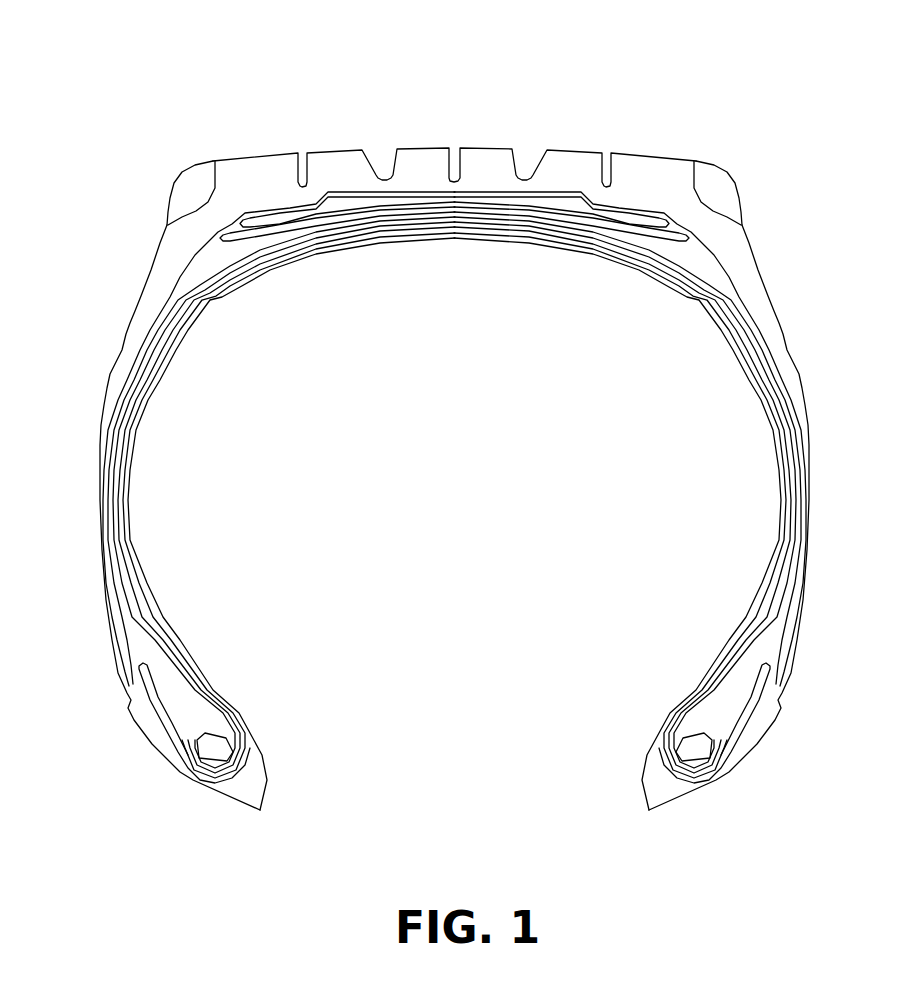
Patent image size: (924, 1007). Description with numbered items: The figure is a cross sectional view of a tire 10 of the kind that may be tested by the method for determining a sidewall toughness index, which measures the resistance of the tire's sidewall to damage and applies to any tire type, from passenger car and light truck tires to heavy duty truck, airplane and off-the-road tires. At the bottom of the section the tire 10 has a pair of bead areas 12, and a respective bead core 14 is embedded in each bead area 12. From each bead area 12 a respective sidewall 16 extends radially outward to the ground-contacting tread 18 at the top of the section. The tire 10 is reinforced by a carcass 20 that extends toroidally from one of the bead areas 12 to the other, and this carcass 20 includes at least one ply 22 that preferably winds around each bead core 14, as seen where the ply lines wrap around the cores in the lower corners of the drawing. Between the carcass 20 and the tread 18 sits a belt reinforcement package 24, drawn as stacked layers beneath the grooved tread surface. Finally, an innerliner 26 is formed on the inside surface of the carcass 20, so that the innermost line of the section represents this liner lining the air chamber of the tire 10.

The tire 10 is at (860, 117).
The bead area 12 is at (240, 697).
The bead core 14 is at (217, 747).
The sidewall 16 is at (100, 443).
The tread 18 is at (330, 148).
The carcass 20 is at (407, 237).
The ply 22 is at (737, 320).
The belt reinforcement package 24 is at (478, 215).
The innerliner 26 is at (228, 277).